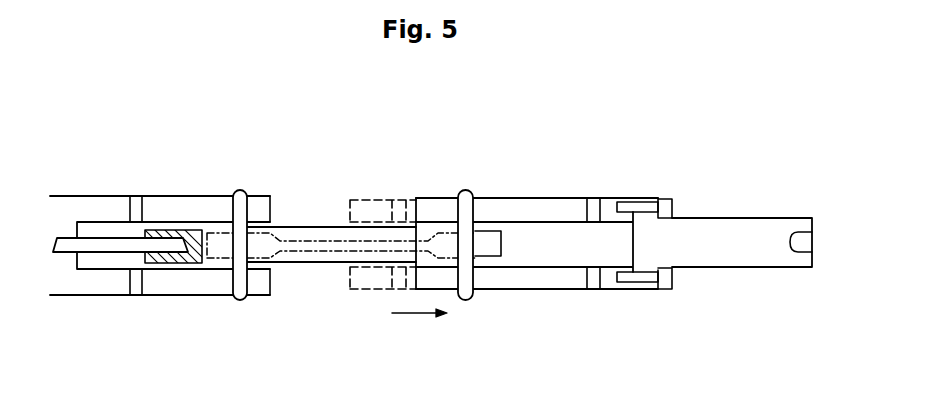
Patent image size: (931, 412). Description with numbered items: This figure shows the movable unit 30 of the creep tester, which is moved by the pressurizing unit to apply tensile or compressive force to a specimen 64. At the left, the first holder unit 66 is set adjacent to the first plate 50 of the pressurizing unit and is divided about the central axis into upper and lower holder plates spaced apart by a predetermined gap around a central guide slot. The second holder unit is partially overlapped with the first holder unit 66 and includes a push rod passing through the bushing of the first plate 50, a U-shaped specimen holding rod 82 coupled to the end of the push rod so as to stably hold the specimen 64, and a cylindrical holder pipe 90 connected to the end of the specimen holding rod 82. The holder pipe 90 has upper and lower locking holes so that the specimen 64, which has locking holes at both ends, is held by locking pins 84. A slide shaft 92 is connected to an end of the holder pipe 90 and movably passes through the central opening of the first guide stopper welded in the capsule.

The movable unit 30 is at (248, 160).
The first plate 50 is at (95, 293).
The specimen 64 is at (312, 251).
The first holder unit 66 is at (165, 196).
The specimen holding rod 82 is at (320, 226).
The locking pins 84 is at (247, 300).
The cylindrical holder pipe 90 is at (593, 196).
The slide shaft 92 is at (731, 224).